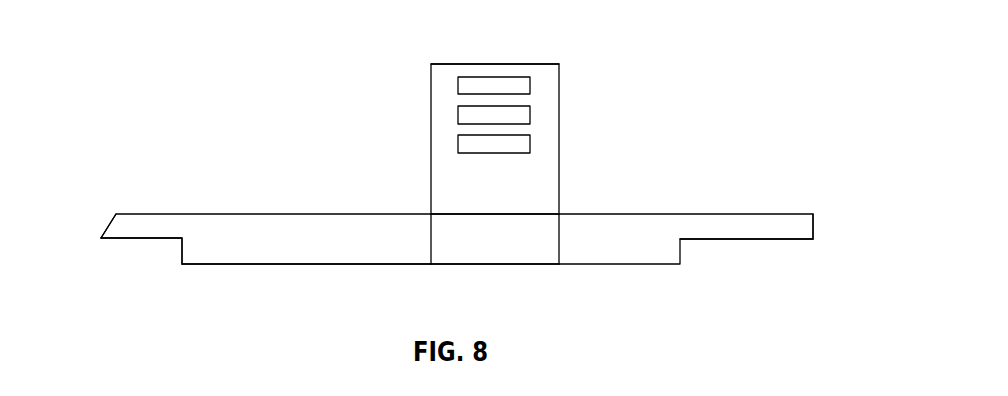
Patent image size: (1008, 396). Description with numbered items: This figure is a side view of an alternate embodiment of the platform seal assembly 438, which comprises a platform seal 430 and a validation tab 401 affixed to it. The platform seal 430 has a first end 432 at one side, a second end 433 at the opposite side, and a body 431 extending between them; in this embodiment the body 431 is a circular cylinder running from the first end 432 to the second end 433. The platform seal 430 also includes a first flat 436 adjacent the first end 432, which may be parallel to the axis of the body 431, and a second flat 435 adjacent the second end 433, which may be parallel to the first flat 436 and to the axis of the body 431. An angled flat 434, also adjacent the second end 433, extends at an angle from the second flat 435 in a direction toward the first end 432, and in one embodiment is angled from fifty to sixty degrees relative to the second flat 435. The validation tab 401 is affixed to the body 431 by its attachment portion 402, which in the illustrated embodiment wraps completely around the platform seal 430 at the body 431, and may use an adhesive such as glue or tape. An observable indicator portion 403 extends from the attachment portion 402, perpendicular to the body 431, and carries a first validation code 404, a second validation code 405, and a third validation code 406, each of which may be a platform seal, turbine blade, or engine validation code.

The validation tab 401 is at (571, 41).
The attachment portion 402 is at (512, 247).
The observable indicator portion 403 is at (495, 63).
The first validation code 404 is at (531, 85).
The second validation code 405 is at (531, 113).
The third validation code 406 is at (531, 142).
The platform seal 430 is at (315, 203).
The body 431 is at (307, 248).
The first end 432 is at (815, 227).
The second end 433 is at (100, 239).
The angled flat 434 is at (110, 222).
The second flat 435 is at (148, 241).
The first flat 436 is at (745, 242).
The platform seal assembly 438 is at (322, 45).